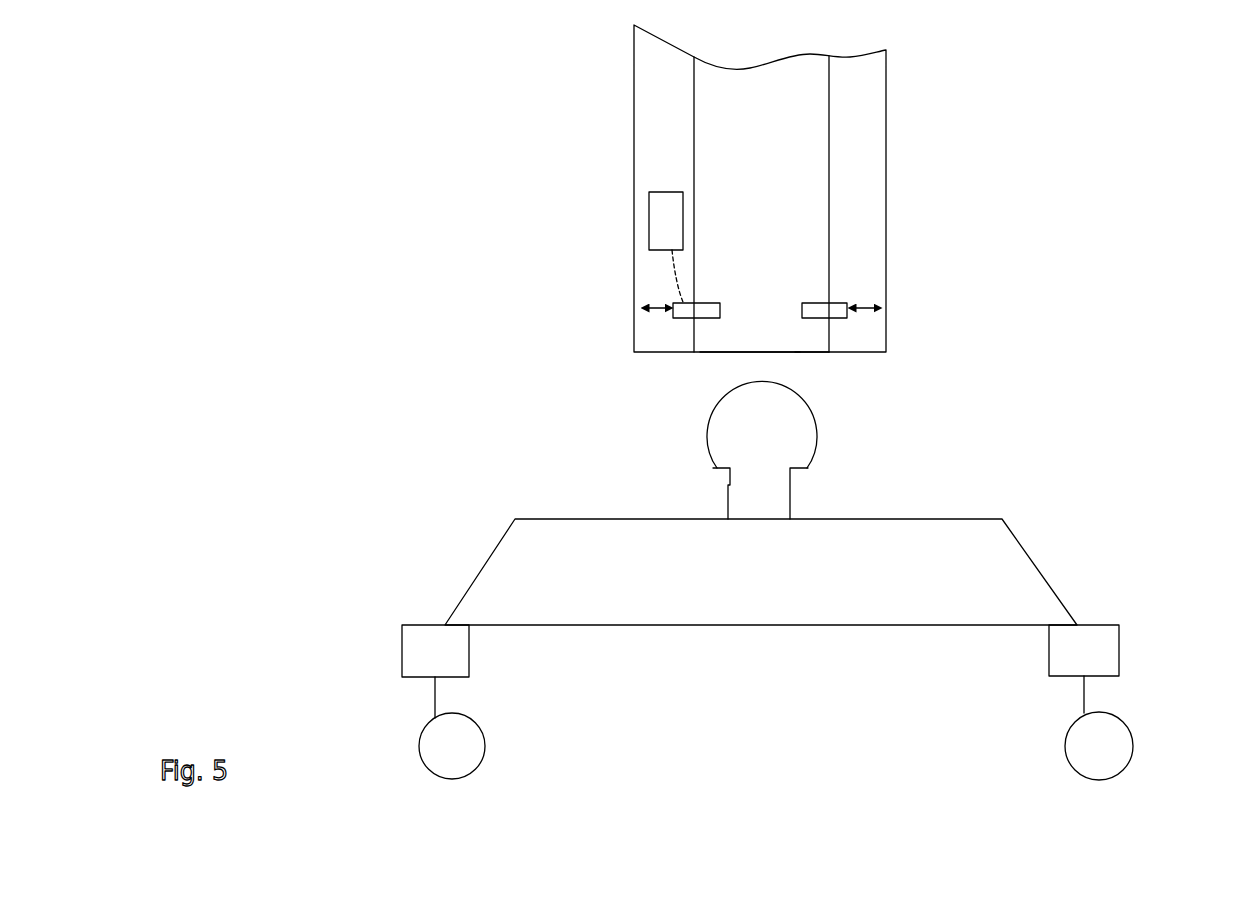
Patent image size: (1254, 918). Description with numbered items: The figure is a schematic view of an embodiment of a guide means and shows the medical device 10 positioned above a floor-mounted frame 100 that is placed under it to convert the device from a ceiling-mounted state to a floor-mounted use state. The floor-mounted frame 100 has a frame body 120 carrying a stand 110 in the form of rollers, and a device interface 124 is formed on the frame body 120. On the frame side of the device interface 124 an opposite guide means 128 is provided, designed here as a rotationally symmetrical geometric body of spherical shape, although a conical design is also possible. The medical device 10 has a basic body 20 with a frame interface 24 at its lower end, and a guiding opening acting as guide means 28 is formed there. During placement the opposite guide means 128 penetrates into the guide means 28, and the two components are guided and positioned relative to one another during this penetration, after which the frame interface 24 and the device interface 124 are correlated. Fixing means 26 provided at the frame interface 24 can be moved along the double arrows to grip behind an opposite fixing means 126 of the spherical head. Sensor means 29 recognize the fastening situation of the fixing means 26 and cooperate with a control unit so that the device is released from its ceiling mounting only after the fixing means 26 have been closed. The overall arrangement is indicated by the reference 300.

The medical device 10 is at (918, 172).
The basic body 20 is at (862, 239).
The frame interface 24 is at (812, 360).
The fixing means 26 is at (683, 303).
The guide means 28 is at (749, 337).
The sensor means 29 is at (662, 218).
The floor-mounted frame 100 is at (411, 545).
The stand 110 is at (443, 738).
The frame body 120 is at (472, 598).
The device interface 124 is at (836, 440).
The opposite fixing means 126 is at (800, 470).
The opposite guide means 128 is at (707, 430).
The docking system 300 is at (1130, 331).